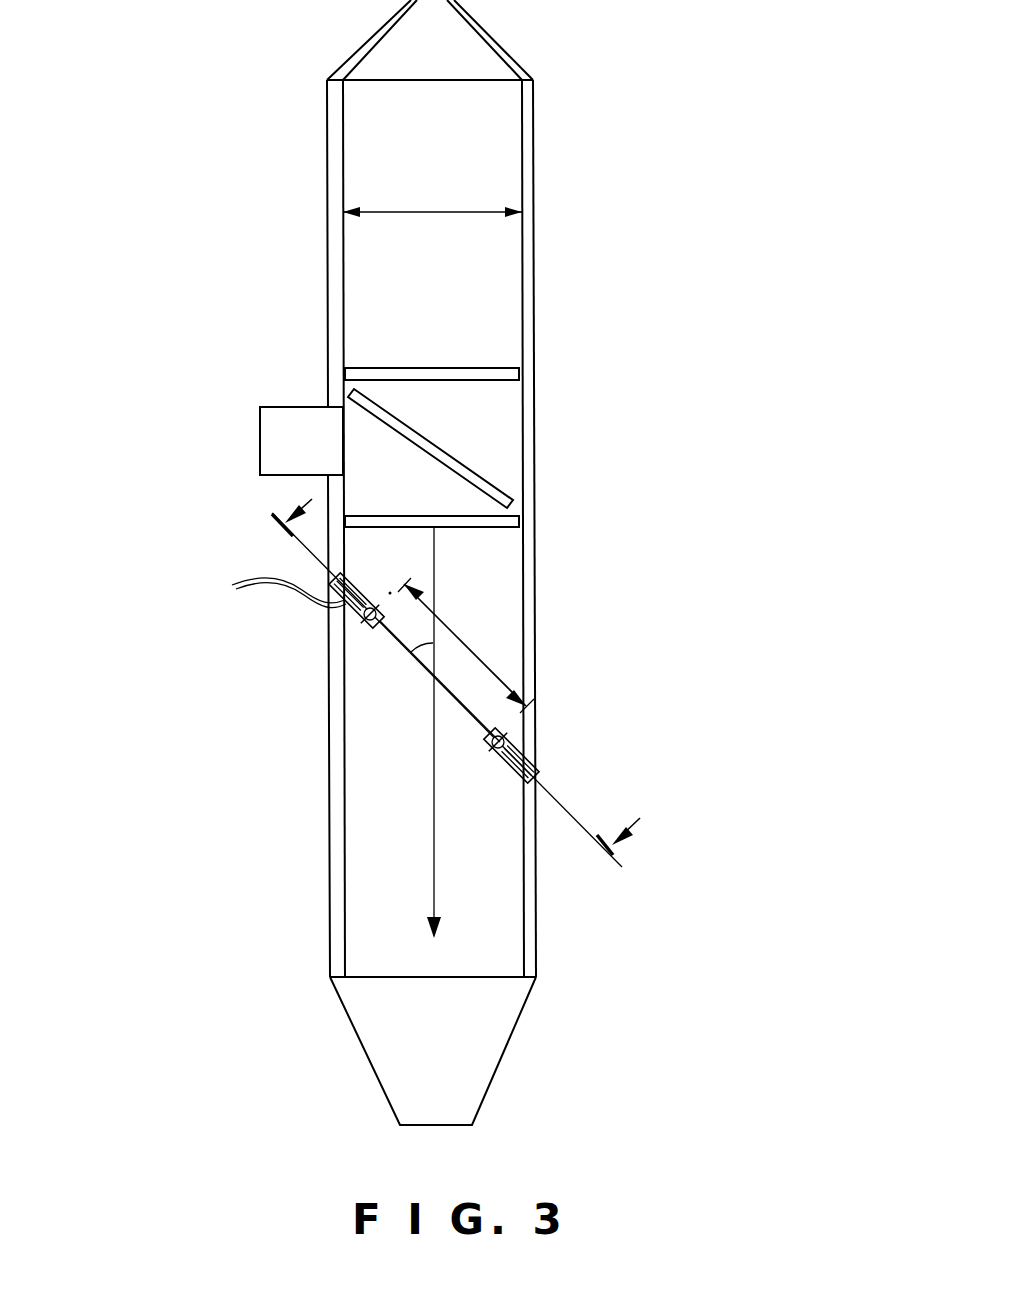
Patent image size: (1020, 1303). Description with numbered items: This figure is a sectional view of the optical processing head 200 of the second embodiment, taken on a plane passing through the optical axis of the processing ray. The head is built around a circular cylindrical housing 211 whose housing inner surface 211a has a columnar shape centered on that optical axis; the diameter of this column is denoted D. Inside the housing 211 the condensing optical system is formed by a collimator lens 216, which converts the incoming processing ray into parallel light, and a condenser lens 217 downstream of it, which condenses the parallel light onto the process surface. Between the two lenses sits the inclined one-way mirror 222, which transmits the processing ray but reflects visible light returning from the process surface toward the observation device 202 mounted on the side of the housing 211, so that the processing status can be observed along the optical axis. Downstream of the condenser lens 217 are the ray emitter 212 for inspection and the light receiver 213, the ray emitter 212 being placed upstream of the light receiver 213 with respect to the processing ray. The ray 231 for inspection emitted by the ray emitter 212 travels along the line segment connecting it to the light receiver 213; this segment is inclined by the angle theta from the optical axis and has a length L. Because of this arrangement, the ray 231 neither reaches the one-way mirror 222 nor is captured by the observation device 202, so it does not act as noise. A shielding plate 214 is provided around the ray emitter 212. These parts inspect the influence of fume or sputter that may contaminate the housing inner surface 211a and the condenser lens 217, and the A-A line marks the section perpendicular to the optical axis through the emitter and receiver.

The optical processing head 200 is at (196, 118).
The circular cylindrical housing 211 is at (533, 141).
The housing inner surface 211a is at (520, 241).
The observation device 202 is at (283, 405).
The collimator lens 216 is at (518, 375).
The condenser lens 217 is at (518, 522).
The one-way mirror 222 is at (453, 455).
The shielding plate 214 is at (268, 593).
The ray emitter for inspection 212 is at (362, 620).
The light receiver 213 is at (505, 735).
The ray for inspection 231 is at (392, 636).